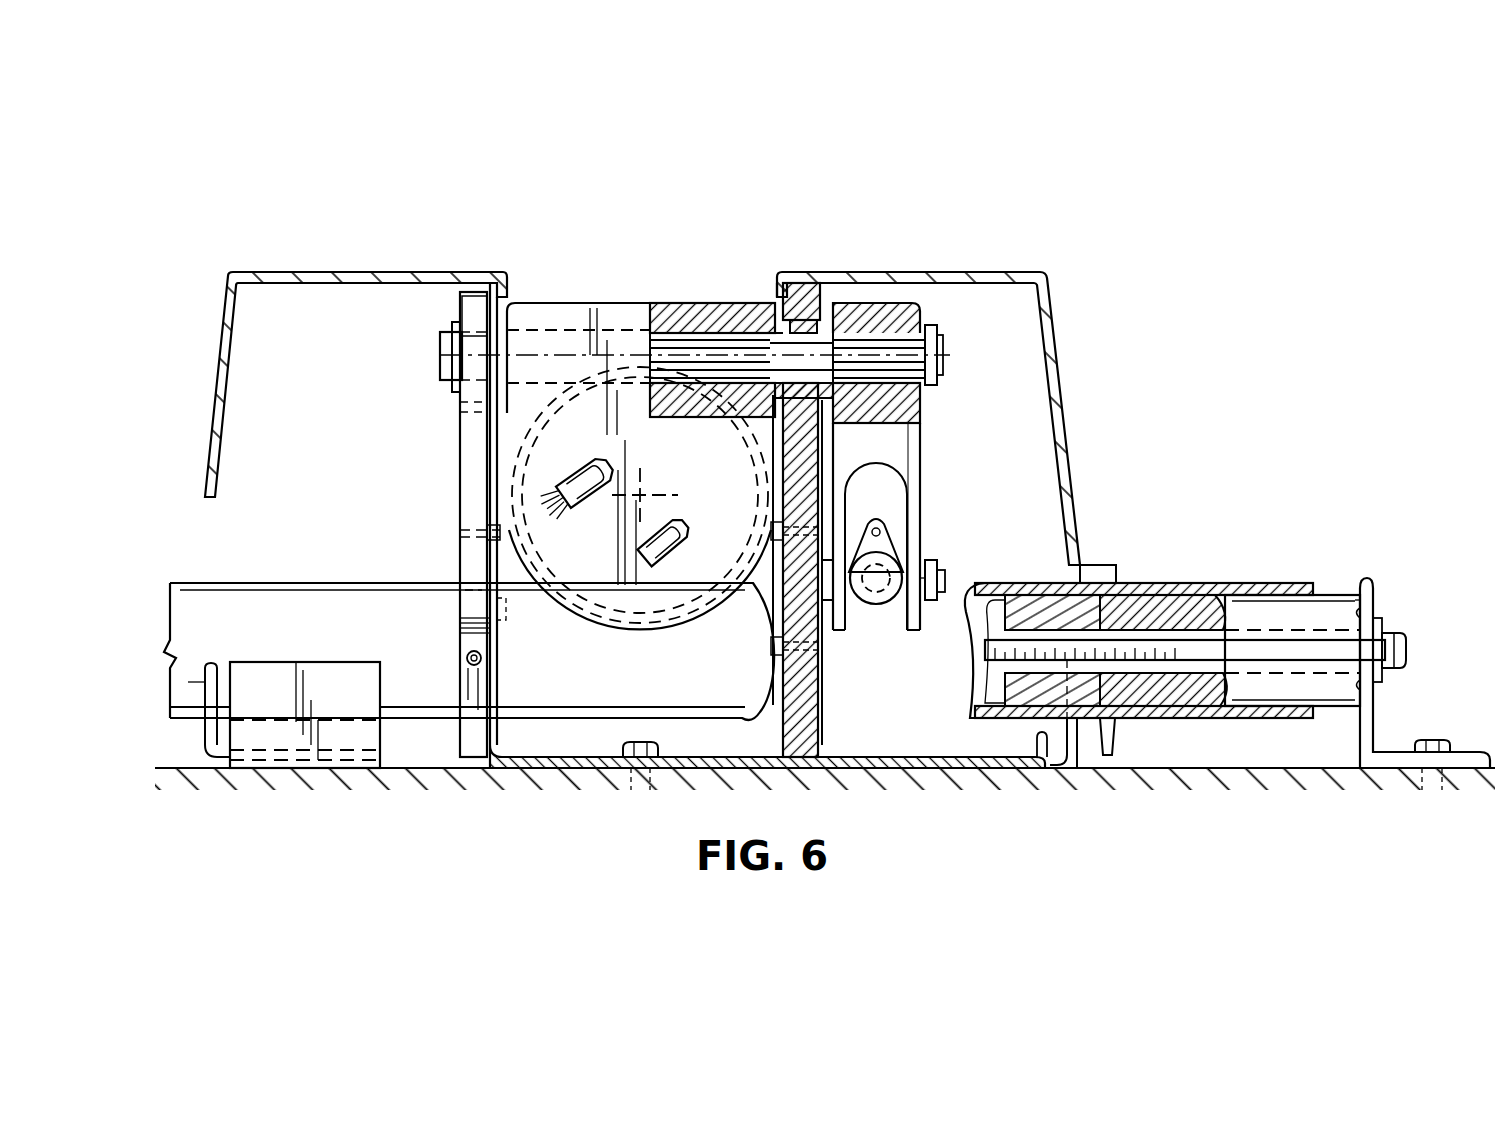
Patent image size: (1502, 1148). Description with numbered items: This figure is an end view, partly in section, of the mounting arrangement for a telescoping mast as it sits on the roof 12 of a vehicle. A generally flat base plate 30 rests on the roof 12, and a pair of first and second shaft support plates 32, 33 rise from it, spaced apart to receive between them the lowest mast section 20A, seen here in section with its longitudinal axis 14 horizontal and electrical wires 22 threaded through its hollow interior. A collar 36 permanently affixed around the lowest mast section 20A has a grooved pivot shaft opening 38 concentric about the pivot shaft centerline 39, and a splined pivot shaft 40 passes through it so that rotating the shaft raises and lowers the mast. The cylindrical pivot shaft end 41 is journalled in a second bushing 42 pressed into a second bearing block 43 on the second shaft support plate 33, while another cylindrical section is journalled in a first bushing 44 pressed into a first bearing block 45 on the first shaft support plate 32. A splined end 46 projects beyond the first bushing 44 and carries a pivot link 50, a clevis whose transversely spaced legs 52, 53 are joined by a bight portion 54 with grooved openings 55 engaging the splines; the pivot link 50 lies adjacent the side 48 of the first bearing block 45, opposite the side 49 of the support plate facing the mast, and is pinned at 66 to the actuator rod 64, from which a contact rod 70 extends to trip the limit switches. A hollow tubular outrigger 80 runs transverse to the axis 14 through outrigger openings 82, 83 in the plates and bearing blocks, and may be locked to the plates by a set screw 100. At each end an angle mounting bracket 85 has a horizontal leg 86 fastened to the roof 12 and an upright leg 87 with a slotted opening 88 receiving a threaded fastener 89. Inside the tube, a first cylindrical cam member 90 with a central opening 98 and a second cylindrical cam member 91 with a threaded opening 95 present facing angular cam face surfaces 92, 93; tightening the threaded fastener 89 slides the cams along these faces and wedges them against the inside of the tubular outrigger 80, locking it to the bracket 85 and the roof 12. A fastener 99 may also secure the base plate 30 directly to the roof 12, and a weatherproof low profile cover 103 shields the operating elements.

The roof 12 is at (1275, 775).
The longitudinal axis 14 is at (641, 496).
The lowest mast section 20A is at (620, 620).
The electrical wires 22 is at (588, 505).
The base plate 30 is at (933, 768).
The first shaft support plate 32 is at (778, 290).
The second shaft support plate 33 is at (494, 290).
The collar 36 is at (515, 449).
The pivot shaft opening 38 is at (700, 383).
The pivot shaft centerline 39 is at (585, 355).
The pivot shaft 40 is at (722, 325).
The pivot shaft end 41 is at (445, 340).
The second bushing 42 is at (466, 330).
The second bearing block 43 is at (478, 296).
The first bushing 44 is at (810, 322).
The first bearing block 45 is at (800, 297).
The splined end 46 is at (897, 340).
The side of first bearing block 48 is at (815, 460).
The side of first shaft support plate 49 is at (780, 487).
The pivot link 50 is at (920, 448).
The leg of pivot link 52 is at (915, 532).
The leg of pivot link 53 is at (843, 625).
The bight portion 54 is at (875, 310).
The grooved openings 55 is at (930, 358).
The actuator rod 64 is at (890, 602).
The pin 66 is at (937, 572).
The contact rod 70 is at (880, 530).
The tubular outrigger 80 is at (291, 584).
The outrigger opening 82 is at (820, 720).
The outrigger opening 83 is at (470, 588).
The angle mounting bracket 85 is at (1380, 722).
The horizontal leg 86 is at (1400, 768).
The upright leg 87 is at (1370, 598).
The opening 88 is at (1382, 625).
The threaded fastener 89 is at (1407, 655).
The first cylindrical cam member 90 is at (1290, 600).
The second cylindrical cam member 91 is at (1042, 588).
The cam face surface 92 is at (1135, 630).
The cam face surface 93 is at (1072, 712).
The threaded opening 95 is at (1058, 660).
The central opening 98 is at (1185, 630).
The fastener 99 is at (622, 748).
The set screw 100 is at (471, 666).
The weatherproof low profile cover 103 is at (340, 272).